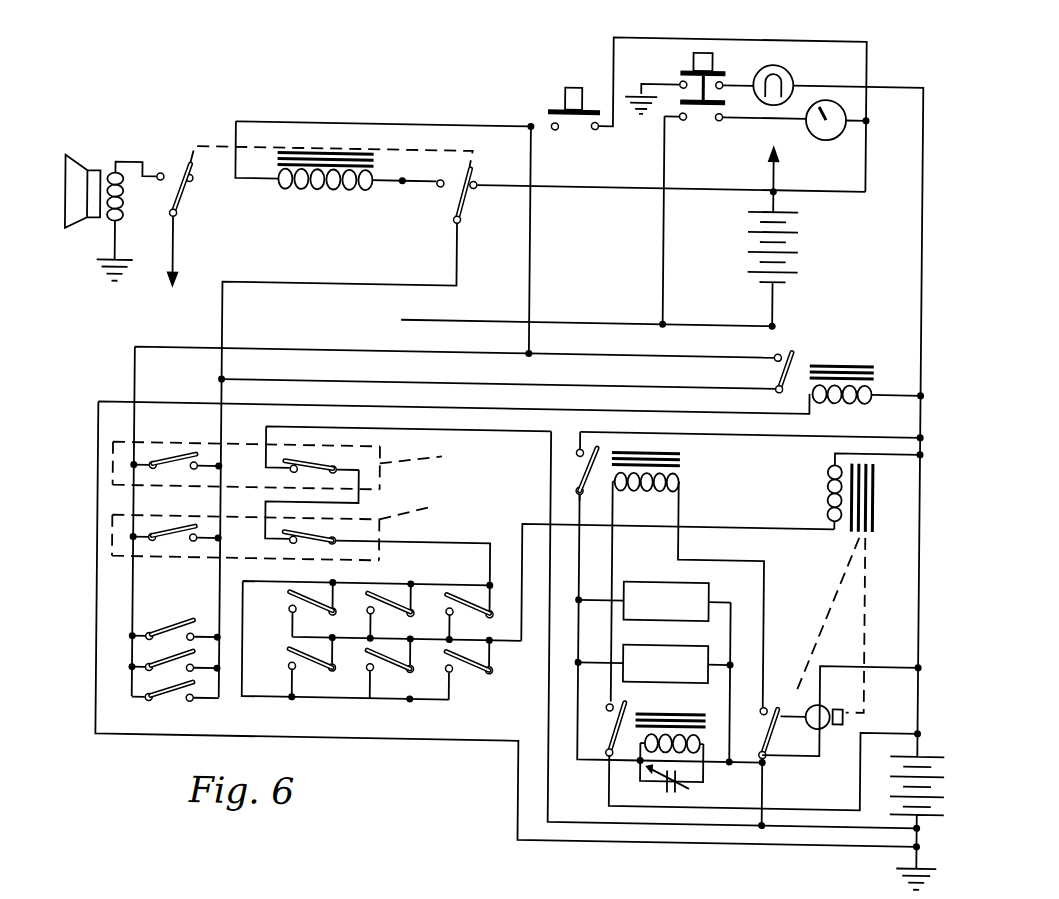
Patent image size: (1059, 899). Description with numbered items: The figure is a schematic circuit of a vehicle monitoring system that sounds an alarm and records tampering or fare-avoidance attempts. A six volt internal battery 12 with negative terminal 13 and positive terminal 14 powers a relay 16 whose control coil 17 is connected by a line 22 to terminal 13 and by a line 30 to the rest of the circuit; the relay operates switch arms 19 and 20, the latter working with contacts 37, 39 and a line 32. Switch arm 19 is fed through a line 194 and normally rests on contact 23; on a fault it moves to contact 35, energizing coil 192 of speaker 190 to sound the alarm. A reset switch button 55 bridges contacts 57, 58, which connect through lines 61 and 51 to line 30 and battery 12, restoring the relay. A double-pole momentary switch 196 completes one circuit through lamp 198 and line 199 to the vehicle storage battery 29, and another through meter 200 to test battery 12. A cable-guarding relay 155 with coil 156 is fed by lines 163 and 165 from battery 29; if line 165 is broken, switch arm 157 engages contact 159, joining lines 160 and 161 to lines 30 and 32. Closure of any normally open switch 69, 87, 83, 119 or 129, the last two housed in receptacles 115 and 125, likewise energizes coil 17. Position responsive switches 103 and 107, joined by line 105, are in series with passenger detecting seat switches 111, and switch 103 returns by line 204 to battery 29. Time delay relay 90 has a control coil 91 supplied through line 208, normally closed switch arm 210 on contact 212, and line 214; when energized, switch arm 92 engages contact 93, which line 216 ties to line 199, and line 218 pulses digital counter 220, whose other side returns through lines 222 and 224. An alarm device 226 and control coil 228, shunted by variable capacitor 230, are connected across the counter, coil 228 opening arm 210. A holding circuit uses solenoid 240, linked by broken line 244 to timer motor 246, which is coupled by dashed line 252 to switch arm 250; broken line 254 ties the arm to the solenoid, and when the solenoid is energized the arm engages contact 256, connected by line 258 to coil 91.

The speaker 190 is at (78, 174).
The switch contact 35 is at (150, 178).
The energizing coil 192 is at (106, 232).
The switch arm 19 is at (178, 178).
The contact 23 is at (188, 188).
The line 194 is at (182, 258).
The relay 16 is at (316, 150).
The control coil 17 is at (295, 184).
The line 30 is at (432, 128).
The line 32 is at (320, 288).
The switch contact 39 is at (438, 188).
The switch contact 37 is at (476, 190).
The switch arm 20 is at (464, 218).
The line 61 is at (540, 116).
The switch button 55 is at (574, 86).
The switch contact 57 is at (554, 131).
The switch contact 58 is at (594, 130).
The line 51 is at (864, 148).
The double pole momentary contact switch 196 is at (718, 46).
The lamp 198 is at (784, 70).
The line 199 is at (916, 84).
The meter 200 is at (812, 130).
The positive terminal 14 is at (768, 187).
The battery 12 is at (802, 228).
The line 22 is at (706, 324).
The negative terminal 13 is at (781, 348).
The contact 159 is at (792, 348).
The switch arm 157 is at (774, 384).
The line 160 is at (580, 354).
The line 161 is at (680, 384).
The line 165 is at (96, 414).
The relay core 155 is at (848, 354).
The control coil 156 is at (836, 400).
The line 163 is at (900, 384).
The micro switch 119 is at (178, 457).
The micro switch 129 is at (184, 529).
The receptacle 115 is at (436, 452).
The receptacle 125 is at (427, 512).
The first normally closed switch 103 is at (308, 460).
The line 105 is at (366, 502).
The second normally closed switch 107 is at (324, 550).
The passenger detecting switches 111 is at (296, 612).
The contact 93 is at (576, 454).
The switch arm 92 is at (575, 491).
The line 216 is at (776, 434).
The line 218 is at (576, 730).
The time delay relay 90 is at (696, 449).
The control coil 91 is at (642, 486).
The line 208 is at (617, 544).
The line 258 is at (738, 560).
The solenoid 240 is at (826, 487).
The broken line 244 is at (876, 549).
The broken line 254 is at (848, 558).
The digital counter 220 is at (668, 580).
The line 222 is at (732, 602).
The alarm device 226 is at (668, 643).
The contact 212 is at (628, 702).
The switch arm 210 is at (686, 711).
The line 214 is at (610, 794).
The line 224 is at (746, 762).
The variable capacitor 230 is at (674, 796).
The control coil 228 is at (690, 788).
The switch contact 256 is at (768, 696).
The switch arm 250 is at (770, 699).
The timer motor 246 is at (820, 722).
The dashed line 252 is at (768, 756).
The line 204 is at (818, 826).
The vehicle storage battery 29 is at (926, 744).
The normally open switch 69 is at (162, 645).
The normally open switch 87 is at (162, 676).
The normally open switch 83 is at (162, 707).